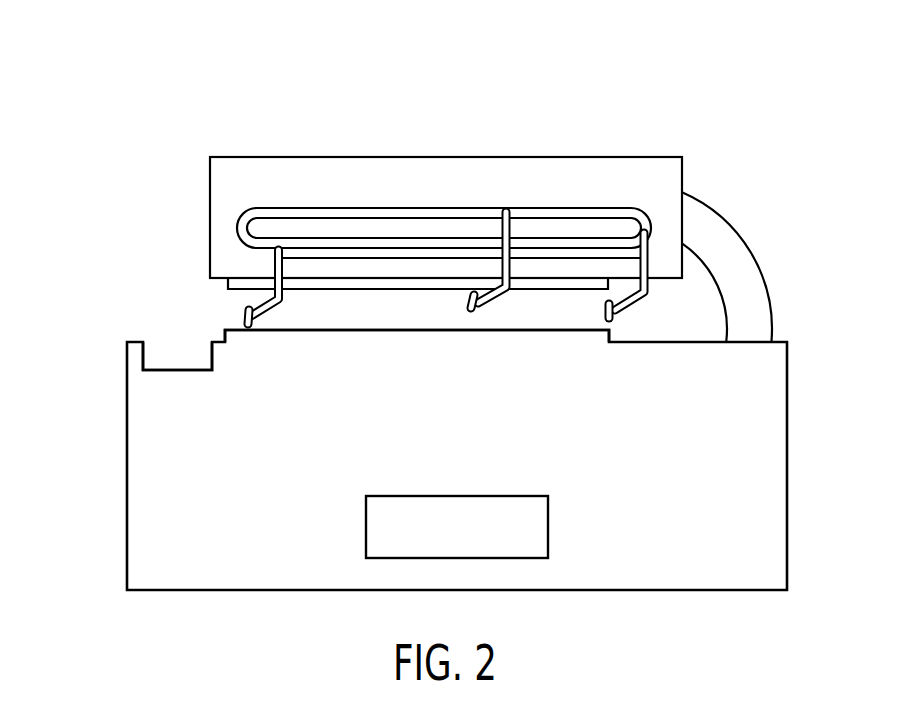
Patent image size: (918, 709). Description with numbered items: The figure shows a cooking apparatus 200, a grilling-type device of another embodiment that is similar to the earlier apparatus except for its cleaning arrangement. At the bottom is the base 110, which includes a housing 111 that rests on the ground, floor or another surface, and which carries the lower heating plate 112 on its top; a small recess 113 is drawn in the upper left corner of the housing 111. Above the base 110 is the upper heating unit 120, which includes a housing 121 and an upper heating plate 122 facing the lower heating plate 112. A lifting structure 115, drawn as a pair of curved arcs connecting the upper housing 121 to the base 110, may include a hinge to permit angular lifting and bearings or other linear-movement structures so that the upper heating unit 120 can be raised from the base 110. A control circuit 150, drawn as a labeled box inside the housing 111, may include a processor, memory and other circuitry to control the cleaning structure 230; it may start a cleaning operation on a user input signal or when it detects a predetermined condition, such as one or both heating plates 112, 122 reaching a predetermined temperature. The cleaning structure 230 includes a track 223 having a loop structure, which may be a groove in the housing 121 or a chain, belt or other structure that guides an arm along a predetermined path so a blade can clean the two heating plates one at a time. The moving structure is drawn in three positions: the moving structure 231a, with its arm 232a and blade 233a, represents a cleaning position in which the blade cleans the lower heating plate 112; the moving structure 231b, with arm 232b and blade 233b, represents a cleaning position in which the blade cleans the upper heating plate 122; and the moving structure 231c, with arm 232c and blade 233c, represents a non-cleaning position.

The cooking apparatus 200 is at (641, 82).
The base 110 is at (435, 391).
The housing 111 is at (778, 473).
The lower heating plate 112 is at (461, 343).
The recess 113 is at (181, 371).
The lifting structure 115 is at (766, 308).
The control circuit 150 is at (548, 522).
The upper heating unit 120 is at (469, 243).
The housing 121 is at (655, 170).
The upper heating plate 122 is at (366, 288).
The cleaning structure 230 is at (469, 216).
The track 223 is at (366, 212).
The moving structure 231a is at (218, 273).
The arm 232a is at (275, 301).
The blade 233a is at (246, 319).
The moving structure 231b is at (507, 214).
The arm 232b is at (508, 211).
The blade 233b is at (474, 297).
The moving structure 231c is at (660, 233).
The arm 232c is at (646, 262).
The blade 233c is at (607, 311).